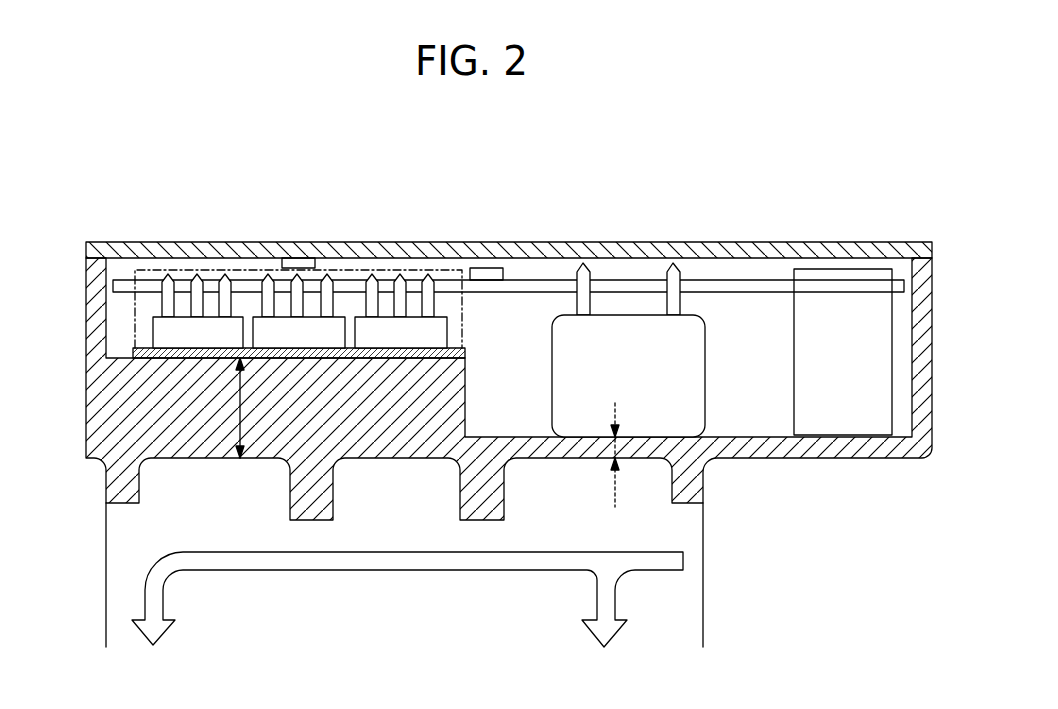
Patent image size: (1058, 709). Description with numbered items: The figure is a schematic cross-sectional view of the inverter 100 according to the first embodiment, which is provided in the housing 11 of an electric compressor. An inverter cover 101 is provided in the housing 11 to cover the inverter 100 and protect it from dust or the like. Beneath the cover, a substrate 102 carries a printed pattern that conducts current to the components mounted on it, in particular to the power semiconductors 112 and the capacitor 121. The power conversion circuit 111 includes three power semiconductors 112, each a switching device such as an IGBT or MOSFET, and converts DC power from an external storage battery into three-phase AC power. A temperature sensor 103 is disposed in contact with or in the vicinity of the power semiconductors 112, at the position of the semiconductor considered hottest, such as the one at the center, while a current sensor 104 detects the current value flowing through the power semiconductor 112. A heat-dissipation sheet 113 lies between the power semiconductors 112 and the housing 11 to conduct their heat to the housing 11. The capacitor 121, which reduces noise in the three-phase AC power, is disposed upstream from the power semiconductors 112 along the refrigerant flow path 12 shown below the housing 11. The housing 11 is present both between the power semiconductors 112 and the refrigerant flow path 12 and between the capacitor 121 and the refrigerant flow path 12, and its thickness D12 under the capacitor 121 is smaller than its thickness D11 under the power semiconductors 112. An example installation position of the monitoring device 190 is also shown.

The inverter 100 is at (677, 182).
The inverter cover 101 is at (125, 245).
The substrate 102 is at (750, 280).
The temperature sensor 103 is at (293, 257).
The current sensor 104 is at (483, 268).
The housing 11 is at (113, 403).
The power conversion circuit 111 is at (135, 305).
The power semiconductor 112 is at (212, 318).
The heat-dissipation sheet 113 is at (163, 352).
The capacitor 121 is at (641, 315).
The monitoring device 190 is at (850, 269).
The refrigerant flow path 12 is at (683, 563).
The thickness of the housing between the power semiconductor and the refrigerant flo D11 is at (238, 420).
The thickness of the housing between the capacitor and the refrigerant flow path D12 is at (592, 455).